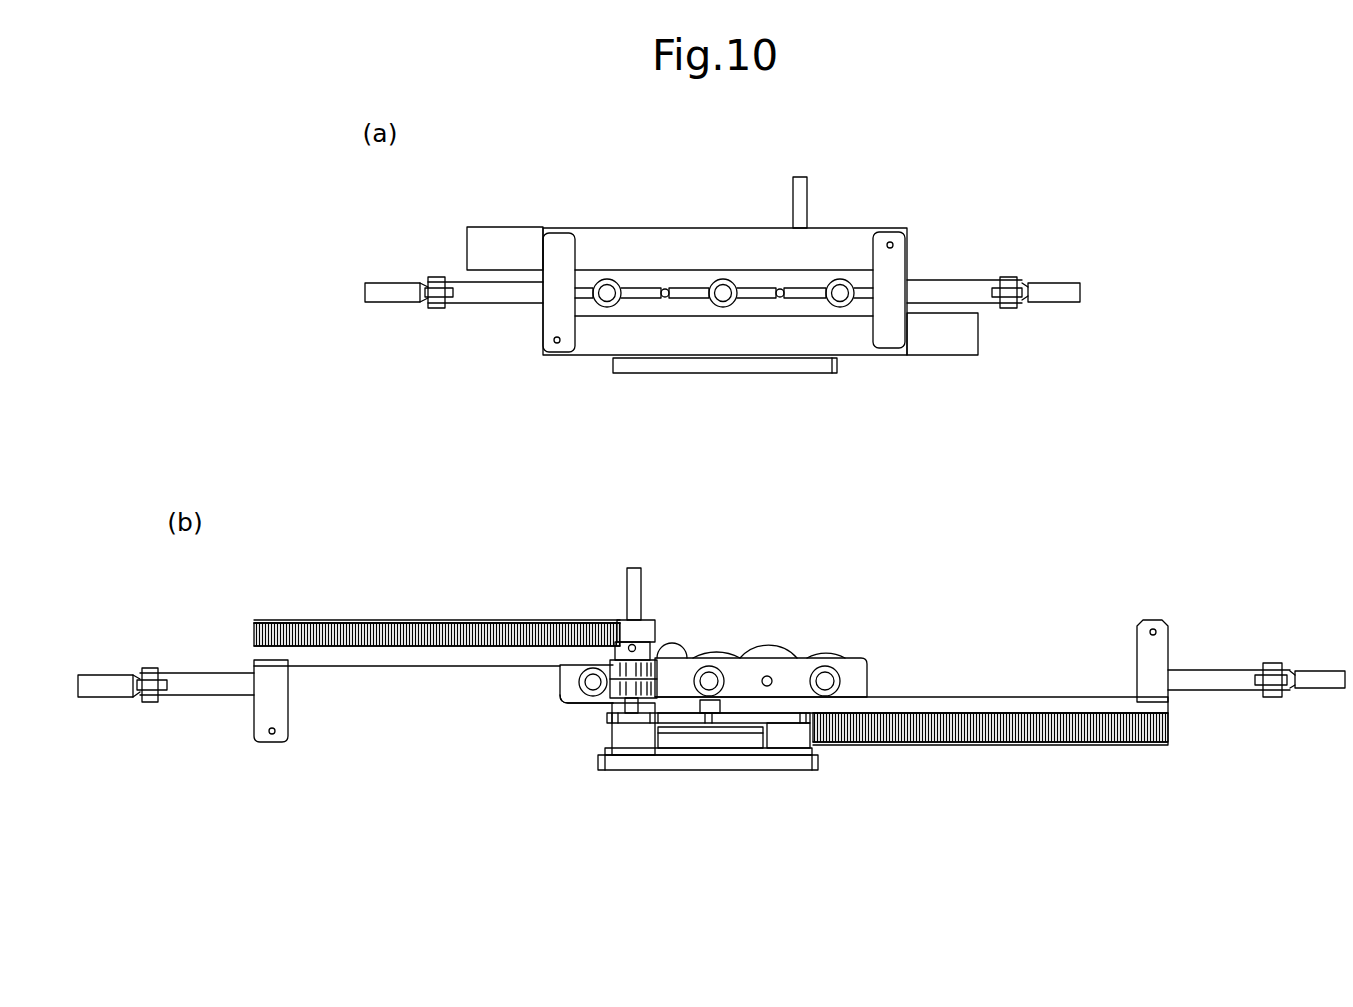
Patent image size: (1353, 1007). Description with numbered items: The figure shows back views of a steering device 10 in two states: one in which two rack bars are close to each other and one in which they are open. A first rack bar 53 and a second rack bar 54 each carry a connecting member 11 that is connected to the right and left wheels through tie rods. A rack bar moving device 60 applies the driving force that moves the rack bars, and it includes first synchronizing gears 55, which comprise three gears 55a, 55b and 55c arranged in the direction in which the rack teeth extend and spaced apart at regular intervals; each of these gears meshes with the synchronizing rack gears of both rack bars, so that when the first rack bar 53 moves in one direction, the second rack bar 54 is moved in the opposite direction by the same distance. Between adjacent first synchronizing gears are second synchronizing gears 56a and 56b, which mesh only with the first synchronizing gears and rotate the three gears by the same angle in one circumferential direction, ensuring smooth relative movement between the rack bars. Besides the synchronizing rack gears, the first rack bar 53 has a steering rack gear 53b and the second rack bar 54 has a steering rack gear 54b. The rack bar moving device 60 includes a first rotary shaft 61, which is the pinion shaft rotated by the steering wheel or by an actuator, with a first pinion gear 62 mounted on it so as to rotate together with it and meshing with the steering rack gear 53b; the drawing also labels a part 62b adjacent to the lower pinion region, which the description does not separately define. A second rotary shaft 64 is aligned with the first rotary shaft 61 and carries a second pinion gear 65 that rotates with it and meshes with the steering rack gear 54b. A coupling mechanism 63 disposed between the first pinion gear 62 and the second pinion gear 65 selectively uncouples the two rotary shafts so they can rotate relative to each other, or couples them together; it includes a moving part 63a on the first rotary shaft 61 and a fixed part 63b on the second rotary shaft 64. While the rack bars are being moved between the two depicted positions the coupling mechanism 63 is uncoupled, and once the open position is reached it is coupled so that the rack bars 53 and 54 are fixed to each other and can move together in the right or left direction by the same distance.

The first steering device 10 is at (901, 214).
The connecting member 11 is at (970, 287).
The first rack bar 53 is at (520, 254).
The steering rack gear 53b is at (405, 625).
The second rack bar 54 is at (938, 325).
The steering rack gear 54b is at (1008, 738).
The first synchronizing gears 55 is at (855, 428).
The gear 55a is at (607, 307).
The gear 55b is at (723, 307).
The gear 55c is at (840, 307).
The gear 56a is at (780, 289).
The gear 56b is at (665, 289).
The rack bar moving device 60 is at (610, 612).
The first rotary shaft 61 is at (803, 205).
The first pinion gear 62 is at (627, 632).
The lower slider block 62b is at (790, 735).
The coupling mechanism 63 is at (476, 690).
The moving part 63a is at (585, 676).
The fixed part 63b is at (585, 705).
The second rotary shaft 64 is at (662, 722).
The second pinion gear 65 is at (640, 740).